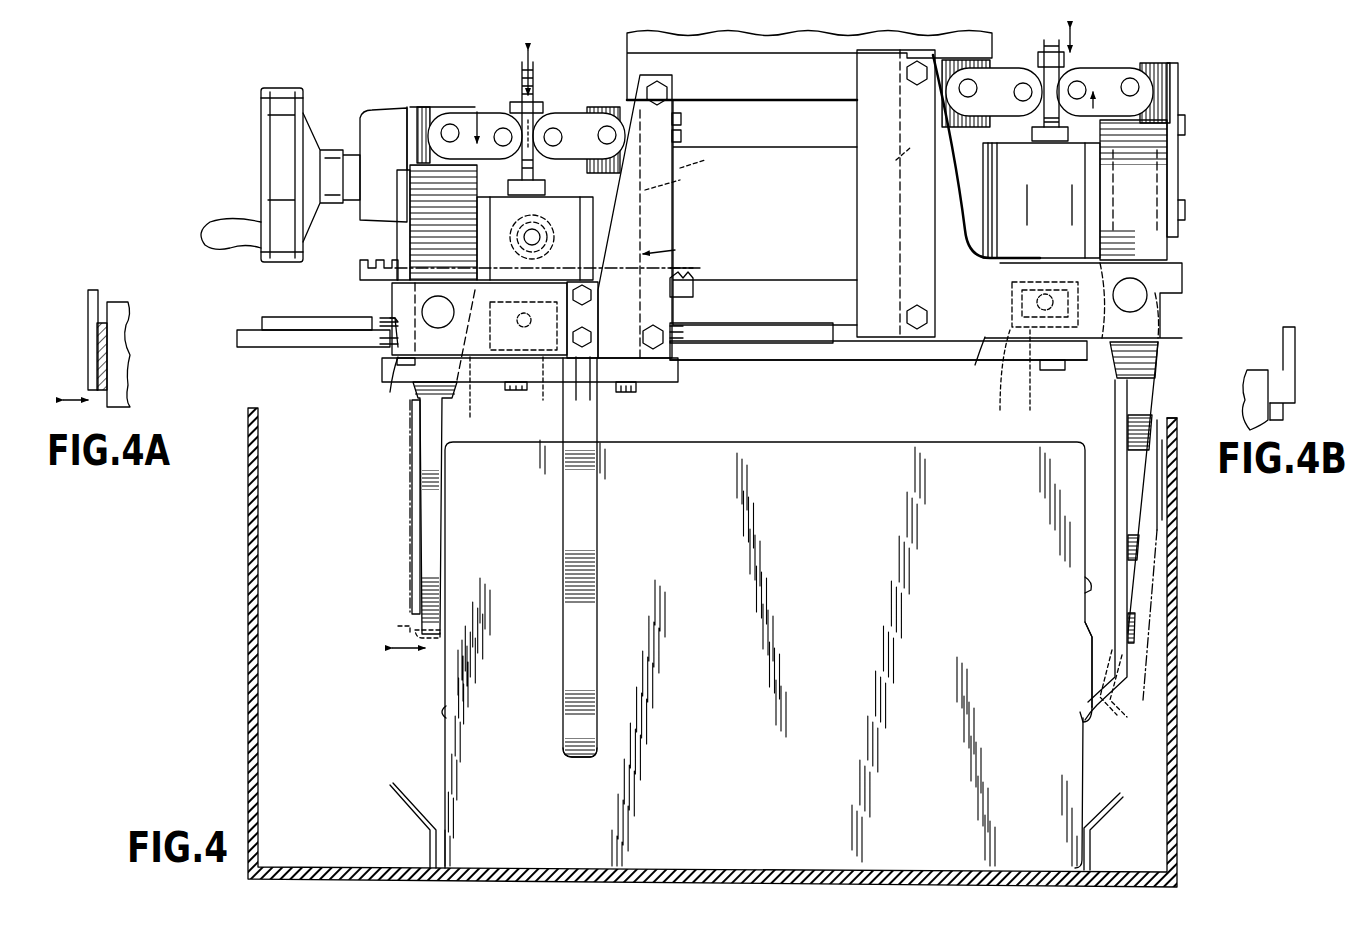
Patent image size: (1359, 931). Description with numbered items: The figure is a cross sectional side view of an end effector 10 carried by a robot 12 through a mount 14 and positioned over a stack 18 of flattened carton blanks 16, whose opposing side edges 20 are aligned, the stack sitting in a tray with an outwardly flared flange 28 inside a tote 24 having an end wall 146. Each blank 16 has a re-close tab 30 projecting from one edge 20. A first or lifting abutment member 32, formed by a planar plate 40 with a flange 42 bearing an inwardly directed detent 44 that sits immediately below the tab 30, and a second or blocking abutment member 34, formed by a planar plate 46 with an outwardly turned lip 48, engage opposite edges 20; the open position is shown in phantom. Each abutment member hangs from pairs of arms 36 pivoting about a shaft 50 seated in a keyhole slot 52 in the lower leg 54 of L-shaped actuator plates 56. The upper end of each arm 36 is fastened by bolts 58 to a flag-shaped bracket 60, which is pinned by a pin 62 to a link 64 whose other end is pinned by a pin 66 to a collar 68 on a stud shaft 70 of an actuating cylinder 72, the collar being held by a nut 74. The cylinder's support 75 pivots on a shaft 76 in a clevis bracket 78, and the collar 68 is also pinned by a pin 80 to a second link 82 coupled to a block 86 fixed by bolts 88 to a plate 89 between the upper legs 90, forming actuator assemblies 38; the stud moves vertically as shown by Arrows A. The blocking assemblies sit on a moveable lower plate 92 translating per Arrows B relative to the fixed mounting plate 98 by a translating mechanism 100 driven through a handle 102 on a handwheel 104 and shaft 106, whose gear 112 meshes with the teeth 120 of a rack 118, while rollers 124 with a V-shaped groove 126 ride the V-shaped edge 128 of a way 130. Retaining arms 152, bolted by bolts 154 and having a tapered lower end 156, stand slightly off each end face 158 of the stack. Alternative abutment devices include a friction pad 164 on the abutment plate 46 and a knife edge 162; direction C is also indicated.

In FIG. 4, the end effector 10 is at (1262, 122).
In FIG. 4, the robot 12 is at (775, 35).
In FIG. 4, the mount 14 is at (800, 140).
In FIG. 4, the carton blank 16 is at (851, 526).
In FIG. 4A, the carton blank 16 is at (130, 330).
In FIG. 4B, the carton blank 16 is at (1247, 383).
In FIG. 4, the stack 18 is at (808, 442).
In FIG. 4, the side edge 20 is at (1083, 586).
In FIG. 4A, the side edge 20 is at (107, 405).
In FIG. 4B, the side edge 20 is at (1275, 420).
In FIG. 4, the tote 24 is at (246, 705).
In FIG. 4, the flared flange 28 is at (397, 800).
In FIG. 4, the re-close tab 30 is at (1083, 672).
In FIG. 4, the first abutment member 32 is at (1128, 410).
In FIG. 4, the second abutment member 34 is at (422, 497).
In FIG. 4, the arms 36 is at (424, 540).
In FIG. 4, the actuator assembly 38 is at (600, 222).
In FIG. 4, the planar plate 40 is at (1115, 445).
In FIG. 4, the flange 42 is at (1105, 695).
In FIG. 4, the detent 44 is at (1085, 700).
In FIG. 4, the planar plate 46 is at (443, 515).
In FIG. 4A, the planar plate 46 is at (93, 290).
In FIG. 4, the lip 48 is at (433, 640).
In FIG. 4, the shaft 50 is at (438, 312).
In FIG. 4, the keyhole slot 52 is at (405, 330).
In FIG. 4, the lower leg 54 is at (395, 392).
In FIG. 4, the L-shaped actuator plates 56 is at (680, 250).
In FIG. 4, the bolts 58 is at (402, 178).
In FIG. 4, the flag-shaped bracket 60 is at (423, 107).
In FIG. 4, the pin 62 is at (448, 120).
In FIG. 4, the link 64 is at (440, 145).
In FIG. 4, the pin 66 is at (507, 118).
In FIG. 4, the collar 68 is at (535, 110).
In FIG. 4, the stud shaft 70 is at (545, 100).
In FIG. 4, the actuating cylinder 72 is at (602, 305).
In FIG. 4, the nut 74 is at (548, 105).
In FIG. 4, the support 75 is at (1010, 278).
In FIG. 4, the shaft 76 is at (751, 375).
In FIG. 4, the clevis bracket 78 is at (783, 381).
In FIG. 4, the pin 80 is at (553, 142).
In FIG. 4, the second link 82 is at (625, 73).
In FIG. 4, the block 86 is at (682, 106).
In FIG. 4, the bolts 88 is at (682, 128).
In FIG. 4, the plate 89 is at (795, 164).
In FIG. 4, the upper legs 90 is at (690, 182).
In FIG. 4, the moveable lower plate 92 is at (672, 382).
In FIG. 4, the fixed mounting plate 98 is at (775, 352).
In FIG. 4, the translating mechanism 100 is at (190, 150).
In FIG. 4, the handle 102 is at (215, 252).
In FIG. 4, the handwheel 104 is at (292, 88).
In FIG. 4, the shaft 106 is at (352, 205).
In FIG. 4, the gear 112 is at (478, 212).
In FIG. 4, the rack 118 is at (700, 278).
In FIG. 4, the teeth 120 is at (700, 270).
In FIG. 4, the roller 124 is at (385, 330).
In FIG. 4, the V-shaped groove 126 is at (380, 322).
In FIG. 4, the V-shaped edge 128 is at (315, 317).
In FIG. 4, the way 130 is at (787, 328).
In FIG. 4, the end wall 146 is at (1178, 586).
In FIG. 4, the retaining arm 152 is at (598, 567).
In FIG. 4, the bolts 154 is at (576, 385).
In FIG. 4, the tapered lower end 156 is at (562, 760).
In FIG. 4, the end face 158 is at (536, 610).
In FIG. 4B, the knife edge 162 is at (1242, 410).
In FIG. 4A, the friction pad 164 is at (100, 368).
In FIG. 4, the Arrows A is at (540, 60).
In FIG. 4, the Arrows B is at (407, 652).
In FIG. 4, the direction C is at (477, 110).